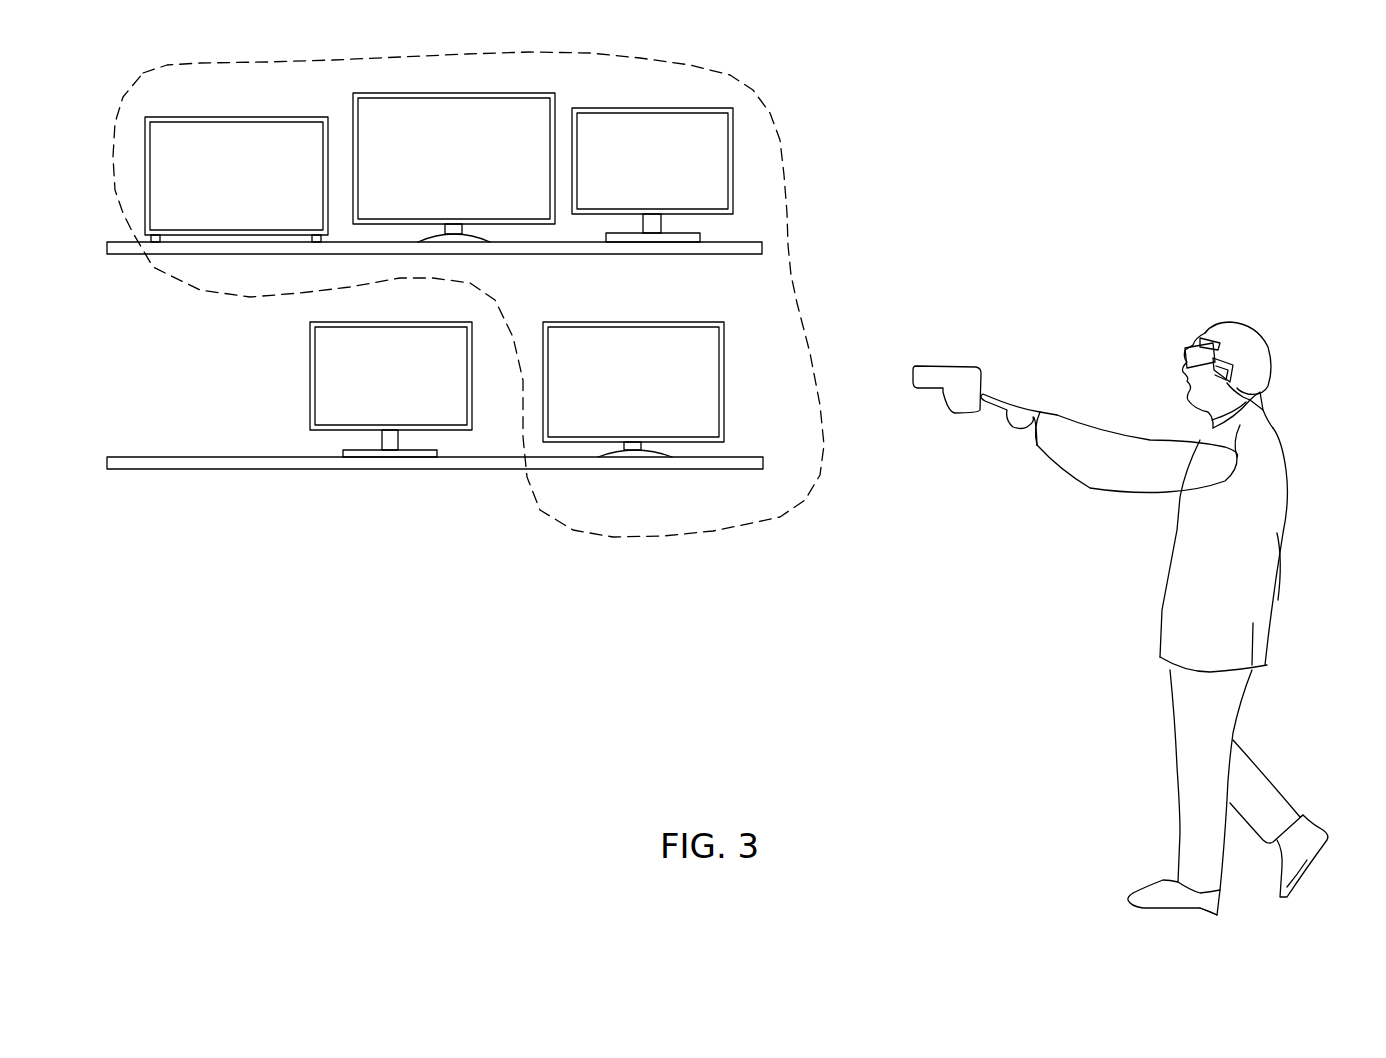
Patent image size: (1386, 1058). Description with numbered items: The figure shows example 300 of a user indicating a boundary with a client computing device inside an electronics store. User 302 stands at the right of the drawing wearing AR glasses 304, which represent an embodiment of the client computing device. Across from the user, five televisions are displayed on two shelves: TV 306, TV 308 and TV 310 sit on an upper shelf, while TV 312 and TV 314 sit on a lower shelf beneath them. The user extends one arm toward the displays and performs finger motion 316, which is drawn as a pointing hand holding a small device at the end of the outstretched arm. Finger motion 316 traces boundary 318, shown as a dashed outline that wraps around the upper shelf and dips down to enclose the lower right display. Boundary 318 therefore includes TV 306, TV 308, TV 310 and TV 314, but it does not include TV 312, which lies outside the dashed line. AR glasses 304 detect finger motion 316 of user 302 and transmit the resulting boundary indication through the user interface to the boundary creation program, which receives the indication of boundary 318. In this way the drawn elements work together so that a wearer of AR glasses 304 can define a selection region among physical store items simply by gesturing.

The example 300 is at (580, 672).
The user 302 is at (1280, 430).
The AR glasses 304 is at (1197, 342).
The TV 306 is at (253, 117).
The TV 308 is at (455, 92).
The TV 310 is at (612, 108).
The TV 312 is at (310, 374).
The TV 314 is at (630, 322).
The finger motion 316 is at (960, 366).
The boundary 318 is at (790, 270).